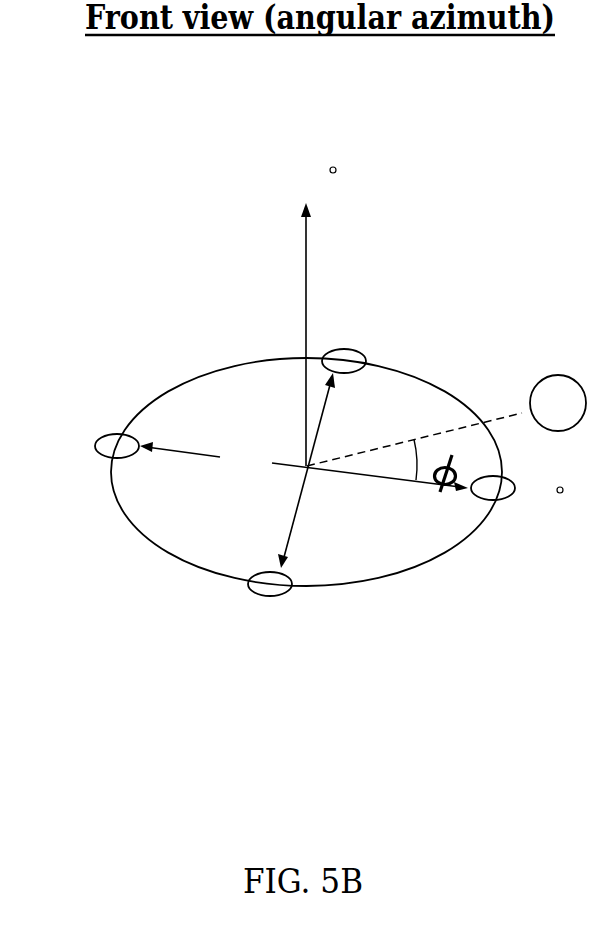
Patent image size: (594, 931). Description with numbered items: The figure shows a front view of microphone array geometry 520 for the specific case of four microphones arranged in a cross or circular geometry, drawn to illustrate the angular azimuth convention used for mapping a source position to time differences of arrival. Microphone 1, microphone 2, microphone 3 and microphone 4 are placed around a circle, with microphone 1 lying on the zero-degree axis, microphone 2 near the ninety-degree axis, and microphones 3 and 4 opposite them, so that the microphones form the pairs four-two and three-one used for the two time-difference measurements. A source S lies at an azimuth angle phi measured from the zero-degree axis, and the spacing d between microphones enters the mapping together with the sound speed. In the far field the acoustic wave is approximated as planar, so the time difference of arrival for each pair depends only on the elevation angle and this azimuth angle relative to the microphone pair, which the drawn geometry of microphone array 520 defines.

The front view of microphone array geometry 520 is at (103, 144).
The microphone 1 is at (493, 488).
The microphone 2 is at (344, 361).
The microphone 3 is at (117, 446).
The microphone 4 is at (270, 584).